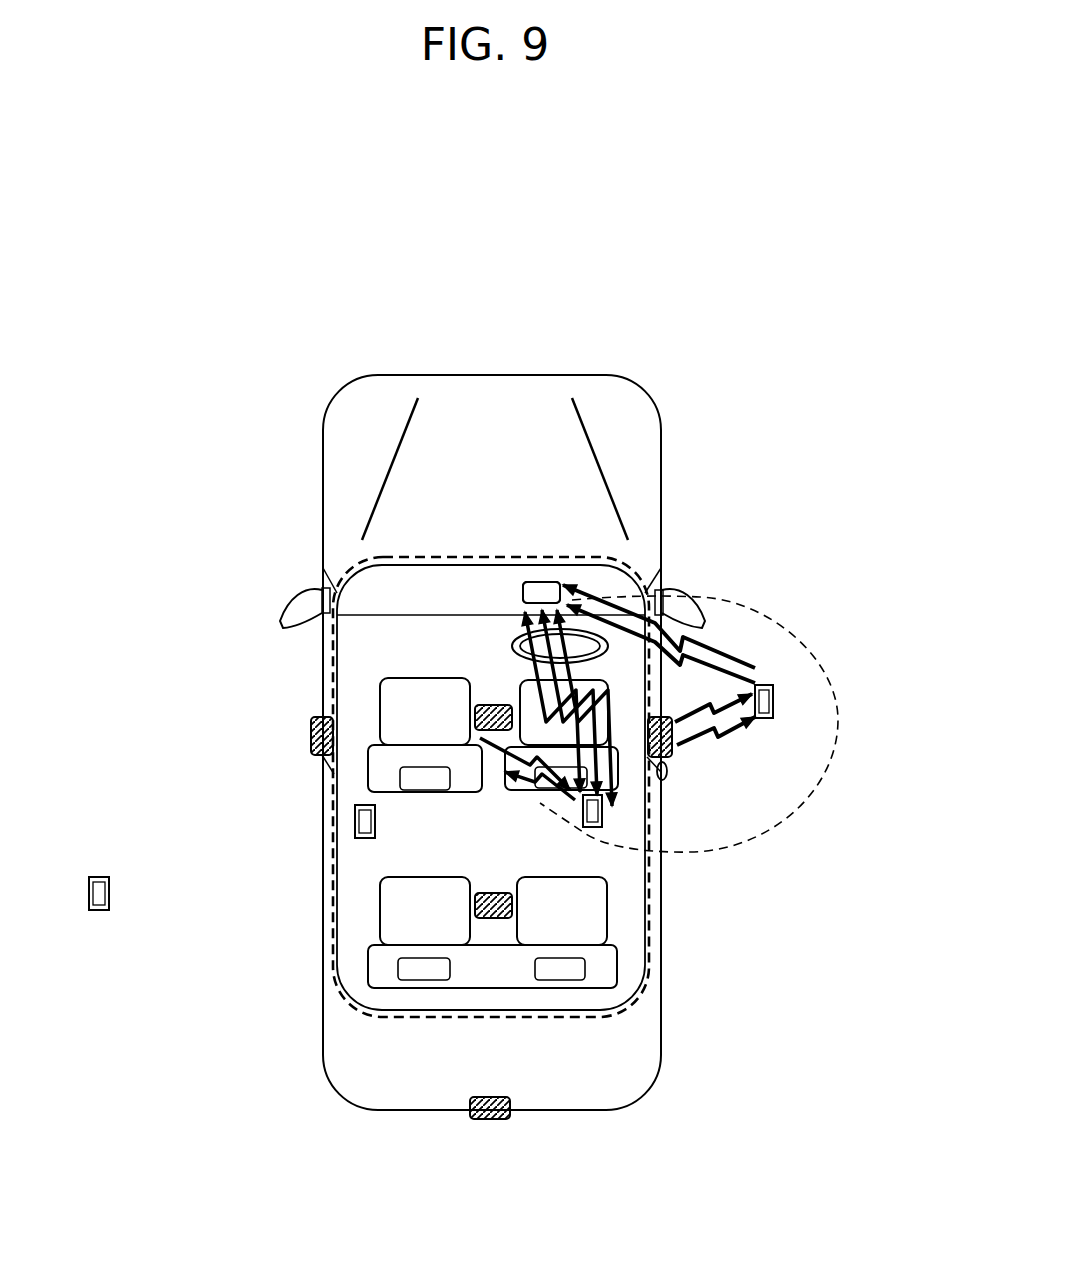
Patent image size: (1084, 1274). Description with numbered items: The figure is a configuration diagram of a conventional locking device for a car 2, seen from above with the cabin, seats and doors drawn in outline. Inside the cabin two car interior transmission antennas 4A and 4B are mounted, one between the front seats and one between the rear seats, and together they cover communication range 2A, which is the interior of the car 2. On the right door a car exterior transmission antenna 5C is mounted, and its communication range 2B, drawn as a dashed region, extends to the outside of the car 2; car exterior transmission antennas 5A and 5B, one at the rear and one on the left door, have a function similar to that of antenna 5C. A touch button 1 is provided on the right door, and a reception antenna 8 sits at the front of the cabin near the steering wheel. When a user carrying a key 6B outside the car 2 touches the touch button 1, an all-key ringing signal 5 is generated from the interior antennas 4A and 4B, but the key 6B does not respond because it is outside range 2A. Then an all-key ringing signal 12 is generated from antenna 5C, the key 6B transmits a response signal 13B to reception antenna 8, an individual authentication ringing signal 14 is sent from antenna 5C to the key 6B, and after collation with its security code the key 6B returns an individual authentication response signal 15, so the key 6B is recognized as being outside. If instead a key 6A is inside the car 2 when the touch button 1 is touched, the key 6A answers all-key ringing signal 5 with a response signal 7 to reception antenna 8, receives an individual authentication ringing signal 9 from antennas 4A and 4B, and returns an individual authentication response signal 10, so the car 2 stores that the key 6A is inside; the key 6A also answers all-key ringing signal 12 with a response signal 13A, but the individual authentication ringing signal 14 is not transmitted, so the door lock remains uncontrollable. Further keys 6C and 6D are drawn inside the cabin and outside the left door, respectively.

The touch button 1 is at (665, 778).
The car 2 is at (657, 402).
The communication range 2A is at (640, 577).
The communication range 2B is at (768, 617).
The car interior transmission antenna 4A is at (475, 715).
The car interior transmission antenna 4B is at (490, 918).
The all-key ringing signal 5 is at (496, 746).
The car exterior transmission antenna 5A is at (481, 1120).
The car exterior transmission antenna 5B is at (310, 730).
The car exterior transmission antenna 5C is at (670, 758).
The key 6A is at (603, 805).
The key 6B is at (773, 700).
The portable device at left seat 6C is at (355, 822).
The portable device outside left side 6D is at (100, 877).
The response signal 7 is at (540, 717).
The reception antenna 8 is at (540, 581).
The individual authentication ringing signal 9 is at (543, 797).
The individual authentication response signal 10 is at (533, 673).
The all-key ringing signal 12 is at (720, 732).
The response signal 13A is at (523, 583).
The response signal 13B is at (733, 673).
The individual authentication ringing signal 14 is at (750, 725).
The individual authentication response signal 15 is at (742, 658).